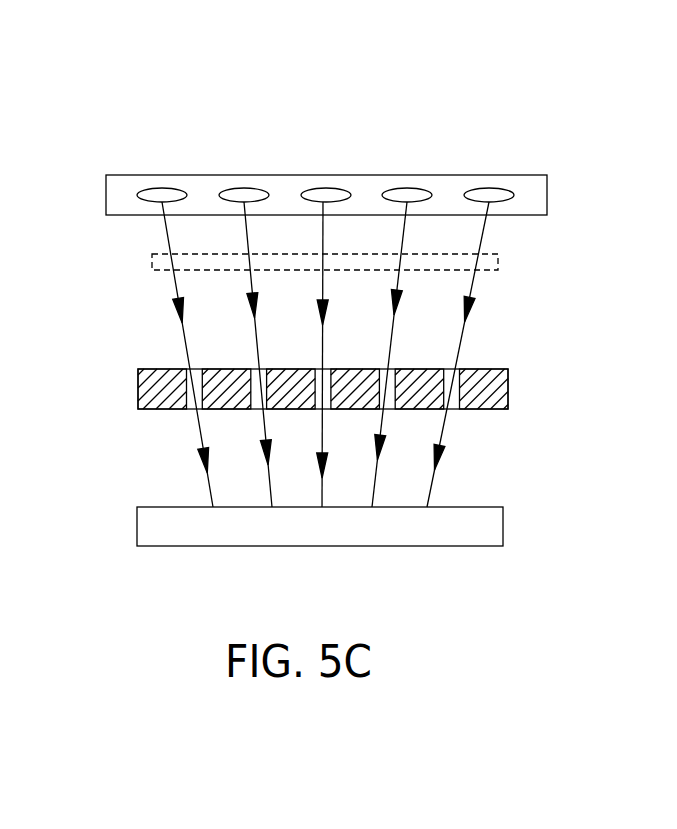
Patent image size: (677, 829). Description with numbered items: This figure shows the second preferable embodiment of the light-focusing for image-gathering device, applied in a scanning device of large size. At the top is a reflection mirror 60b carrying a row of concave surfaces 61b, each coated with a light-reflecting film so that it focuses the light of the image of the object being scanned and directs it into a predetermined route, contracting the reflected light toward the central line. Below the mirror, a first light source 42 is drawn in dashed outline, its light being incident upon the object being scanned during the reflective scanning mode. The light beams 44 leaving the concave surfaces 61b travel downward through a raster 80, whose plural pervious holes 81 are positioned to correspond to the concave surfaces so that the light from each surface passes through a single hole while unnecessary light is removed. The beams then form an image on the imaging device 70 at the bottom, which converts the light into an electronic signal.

The light beams 44 is at (330, 242).
The light emitting elements 61b is at (407, 190).
The light source substrate 60b is at (535, 183).
The first light source 42 is at (498, 263).
The raster 80 is at (375, 419).
The pervious holes 81 is at (456, 406).
The imaging device 70 is at (492, 532).